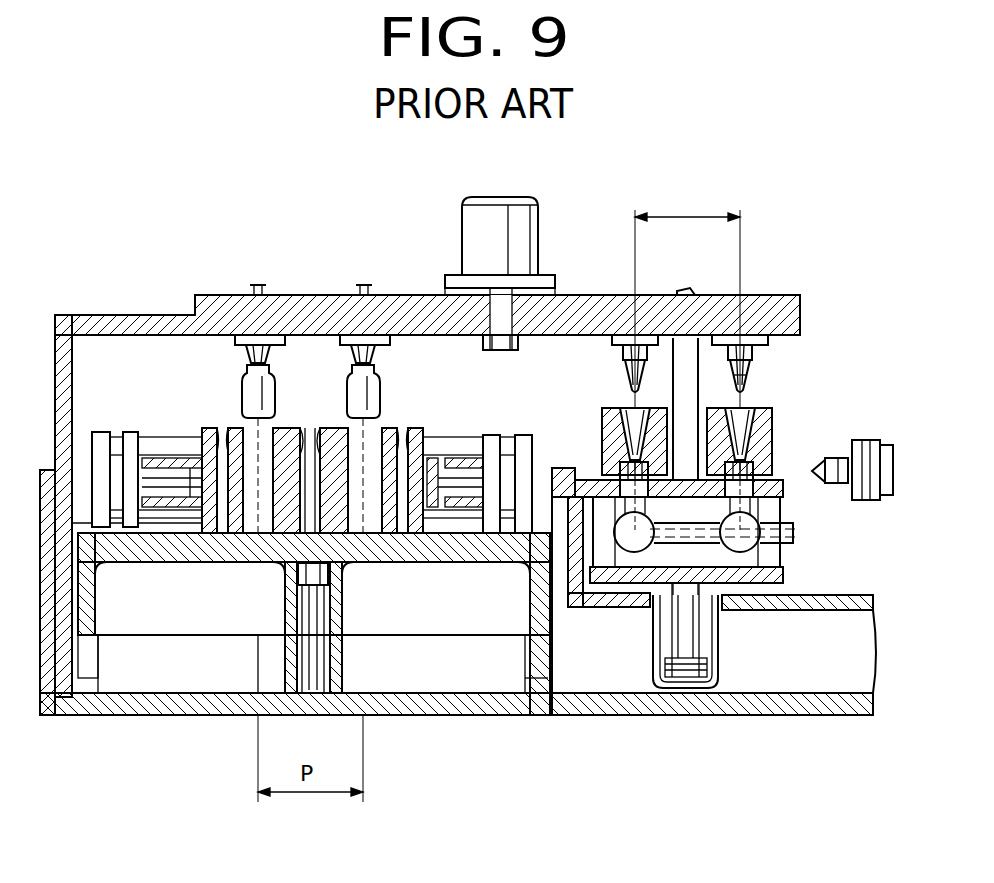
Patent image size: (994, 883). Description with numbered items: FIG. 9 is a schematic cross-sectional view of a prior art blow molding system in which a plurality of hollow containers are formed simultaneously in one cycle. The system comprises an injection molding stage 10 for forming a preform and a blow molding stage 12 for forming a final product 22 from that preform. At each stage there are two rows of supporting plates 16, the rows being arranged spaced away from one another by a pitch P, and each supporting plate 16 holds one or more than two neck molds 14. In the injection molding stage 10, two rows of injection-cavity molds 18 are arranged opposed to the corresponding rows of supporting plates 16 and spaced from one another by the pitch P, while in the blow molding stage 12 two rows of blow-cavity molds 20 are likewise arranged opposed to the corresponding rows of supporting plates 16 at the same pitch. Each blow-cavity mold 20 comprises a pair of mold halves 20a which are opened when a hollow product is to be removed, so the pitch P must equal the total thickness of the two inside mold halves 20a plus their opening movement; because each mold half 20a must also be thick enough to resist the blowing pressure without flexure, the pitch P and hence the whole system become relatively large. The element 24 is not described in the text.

The injection molding stage 10 is at (592, 263).
The blow molding stage 12 is at (326, 292).
The neck mold 14 is at (247, 327).
The supporting plate 16 is at (237, 340).
The injection-cavity mold 18 is at (607, 450).
The blow-cavity mold 20 is at (225, 523).
The mold half 20a is at (223, 443).
The final product 22 is at (243, 387).
The nozzle tip 24 is at (750, 378).